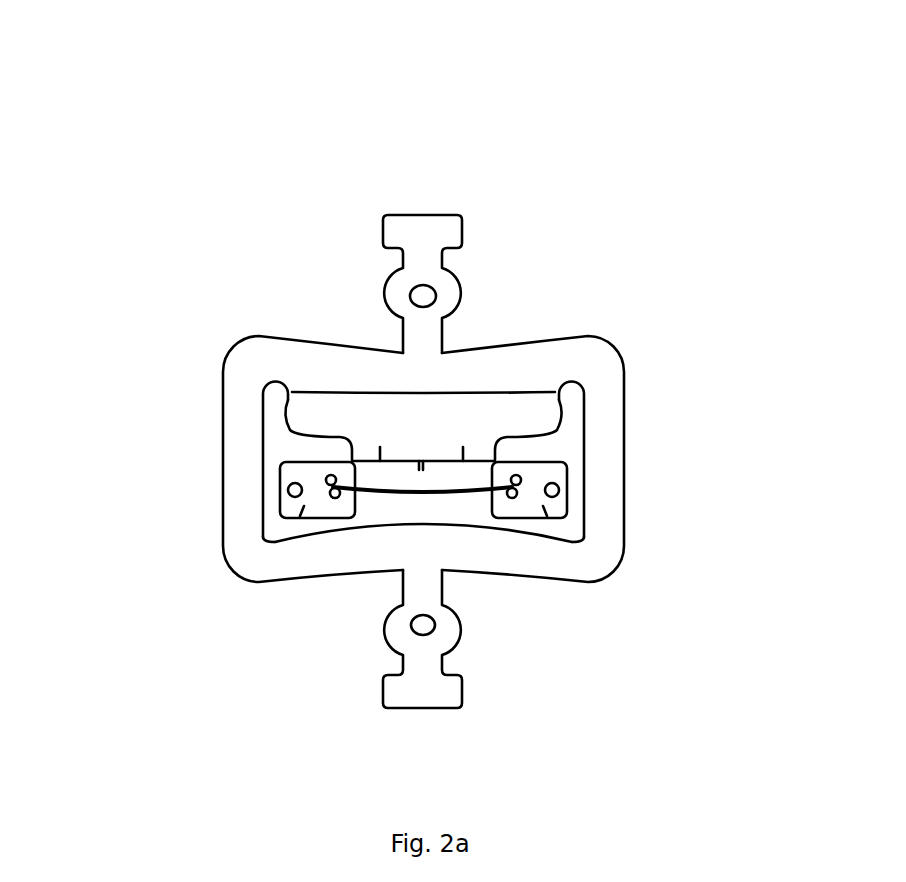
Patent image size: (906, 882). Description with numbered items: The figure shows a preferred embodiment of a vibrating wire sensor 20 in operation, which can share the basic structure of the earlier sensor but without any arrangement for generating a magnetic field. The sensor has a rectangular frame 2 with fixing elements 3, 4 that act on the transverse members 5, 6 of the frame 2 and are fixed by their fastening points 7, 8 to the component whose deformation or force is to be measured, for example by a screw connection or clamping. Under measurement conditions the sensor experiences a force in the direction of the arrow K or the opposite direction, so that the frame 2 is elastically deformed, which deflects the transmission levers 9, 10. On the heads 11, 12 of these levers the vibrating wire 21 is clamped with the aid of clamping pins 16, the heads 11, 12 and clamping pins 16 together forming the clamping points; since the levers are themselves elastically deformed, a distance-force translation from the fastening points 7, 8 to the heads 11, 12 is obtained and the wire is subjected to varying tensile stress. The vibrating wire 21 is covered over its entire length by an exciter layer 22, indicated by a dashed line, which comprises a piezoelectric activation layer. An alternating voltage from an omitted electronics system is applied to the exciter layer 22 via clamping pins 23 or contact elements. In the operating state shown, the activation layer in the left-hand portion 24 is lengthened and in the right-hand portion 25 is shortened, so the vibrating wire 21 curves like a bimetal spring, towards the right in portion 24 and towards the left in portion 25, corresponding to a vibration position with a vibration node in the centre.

The arrow K is at (420, 15).
The vibrating wire sensor 20 is at (592, 198).
The frame 2 is at (178, 409).
The fixing element 3 is at (415, 235).
The fixing element 4 is at (413, 687).
The transverse member 5 is at (383, 385).
The transverse member 6 is at (449, 559).
The fastening point 7 is at (420, 296).
The fastening point 8 is at (424, 627).
The transmission lever 9 is at (332, 405).
The transmission lever 10 is at (528, 405).
The head 11 is at (310, 507).
The head 12 is at (545, 518).
The clamping pin 16 is at (333, 492).
The vibrating wire 21 is at (420, 420).
The exciter layer 22 is at (427, 435).
The clamping pin 23 is at (330, 478).
The left-hand portion 24 is at (378, 440).
The right-hand portion 25 is at (462, 440).